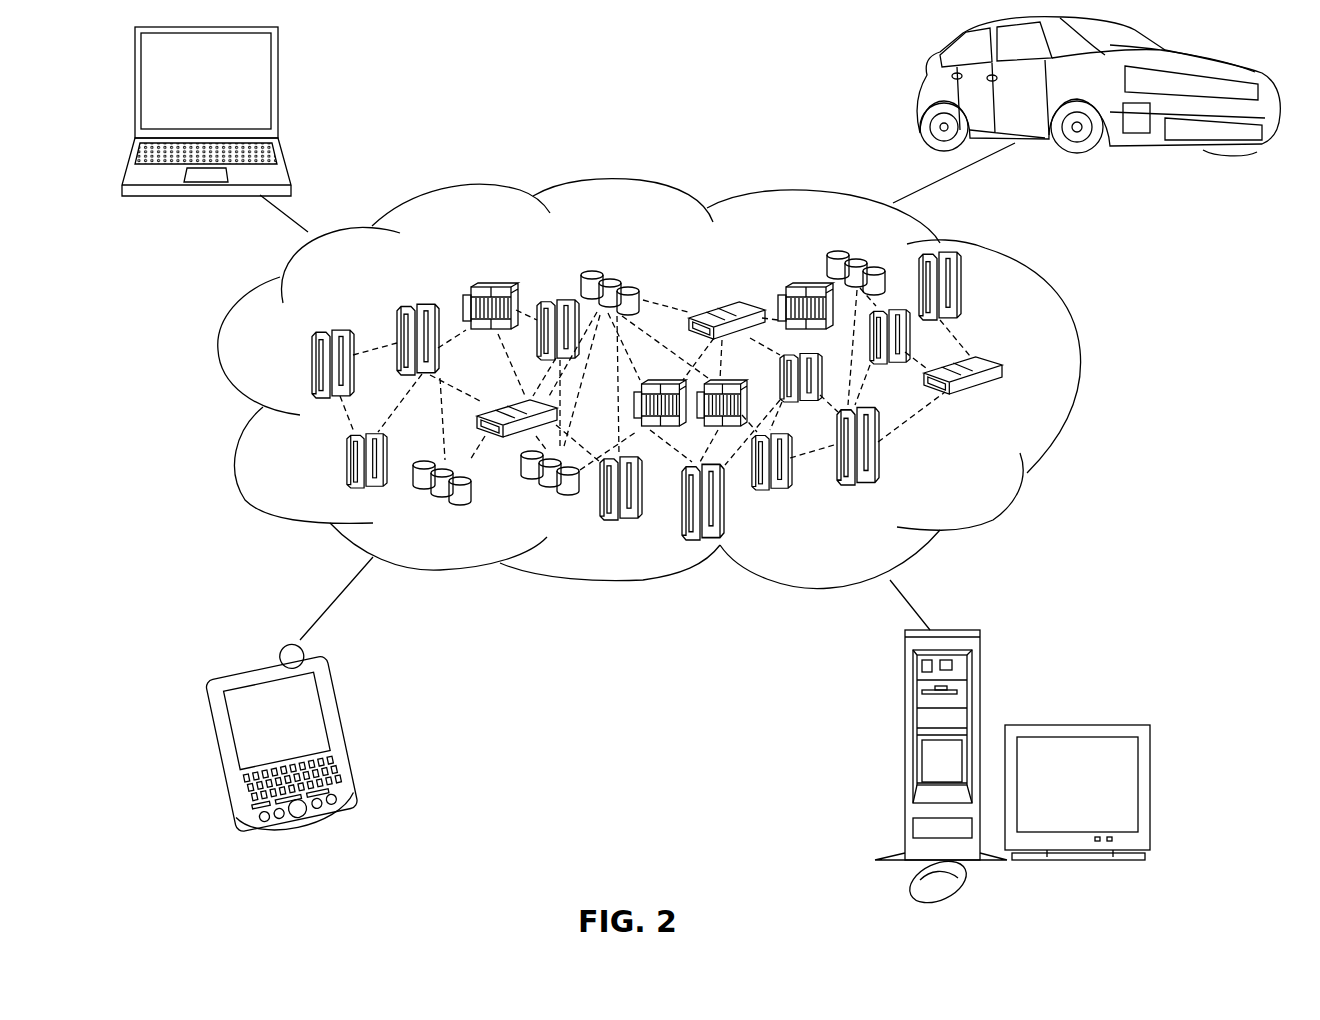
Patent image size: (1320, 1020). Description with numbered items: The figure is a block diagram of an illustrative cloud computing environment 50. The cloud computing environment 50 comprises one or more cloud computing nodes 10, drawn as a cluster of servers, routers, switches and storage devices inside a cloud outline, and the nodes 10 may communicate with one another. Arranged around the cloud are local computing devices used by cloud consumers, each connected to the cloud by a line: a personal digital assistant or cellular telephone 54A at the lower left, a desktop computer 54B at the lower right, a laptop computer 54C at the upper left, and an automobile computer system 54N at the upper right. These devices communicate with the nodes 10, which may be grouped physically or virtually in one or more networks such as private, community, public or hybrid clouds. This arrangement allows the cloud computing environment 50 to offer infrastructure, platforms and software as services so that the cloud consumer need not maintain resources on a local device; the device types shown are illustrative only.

The cloud computing nodes 10 is at (988, 484).
The cloud computing environment 50 is at (1085, 373).
The personal digital assistant (PDA) or cellular telephone 54A is at (333, 707).
The desktop computer 54B is at (905, 690).
The laptop computer 54C is at (278, 63).
The automobile computer system 54N is at (920, 82).